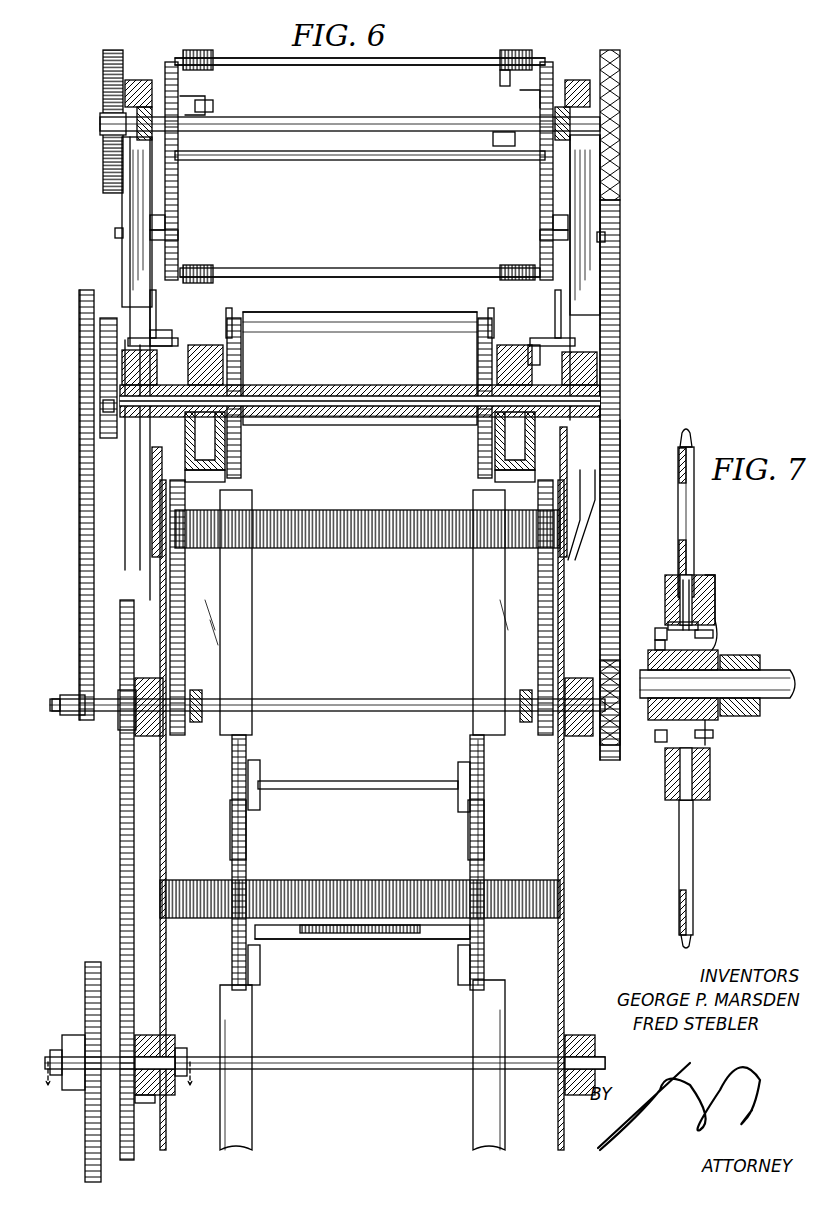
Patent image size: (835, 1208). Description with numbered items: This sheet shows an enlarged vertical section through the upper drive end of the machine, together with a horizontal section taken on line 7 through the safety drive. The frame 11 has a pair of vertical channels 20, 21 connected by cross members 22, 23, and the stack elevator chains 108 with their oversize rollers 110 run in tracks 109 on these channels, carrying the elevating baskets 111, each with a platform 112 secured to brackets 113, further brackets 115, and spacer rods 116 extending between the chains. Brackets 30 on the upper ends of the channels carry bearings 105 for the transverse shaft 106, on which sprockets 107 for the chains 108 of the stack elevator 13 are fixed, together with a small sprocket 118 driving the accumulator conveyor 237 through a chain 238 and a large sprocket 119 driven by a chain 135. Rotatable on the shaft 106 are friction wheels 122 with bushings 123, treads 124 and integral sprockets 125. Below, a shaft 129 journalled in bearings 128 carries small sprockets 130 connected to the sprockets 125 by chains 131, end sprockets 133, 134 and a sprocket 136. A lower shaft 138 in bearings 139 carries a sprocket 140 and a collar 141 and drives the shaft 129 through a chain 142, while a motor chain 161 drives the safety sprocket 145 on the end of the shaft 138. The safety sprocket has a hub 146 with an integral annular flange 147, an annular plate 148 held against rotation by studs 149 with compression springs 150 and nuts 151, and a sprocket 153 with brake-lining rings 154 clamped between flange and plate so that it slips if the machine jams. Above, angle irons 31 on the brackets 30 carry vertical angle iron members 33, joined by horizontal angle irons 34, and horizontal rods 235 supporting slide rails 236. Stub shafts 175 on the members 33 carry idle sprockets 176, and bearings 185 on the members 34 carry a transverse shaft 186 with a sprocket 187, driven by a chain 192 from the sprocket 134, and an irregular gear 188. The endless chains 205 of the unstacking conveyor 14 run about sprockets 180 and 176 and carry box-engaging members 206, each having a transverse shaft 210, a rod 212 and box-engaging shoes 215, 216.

In FIG. 6, the irregular gear 188 is at (103, 85).
In FIG. 6, the horizontal angle irons 34 is at (138, 80).
In FIG. 6, the bearings 185 is at (150, 100).
In FIG. 6, the box-engaging shoe 215 is at (211, 47).
In FIG. 6, the unstacking conveyor 14 is at (261, 54).
In FIG. 6, the transverse shaft 210 is at (322, 66).
In FIG. 6, the box-engaging members 206 is at (427, 52).
In FIG. 6, the box-engaging shoe 216 is at (518, 45).
In FIG. 6, the sprockets 180 is at (182, 95).
In FIG. 6, the transverse shaft 186 is at (392, 117).
In FIG. 6, the rod 212 is at (378, 157).
In FIG. 6, the endless chains 205 is at (178, 194).
In FIG. 6, the idle sprockets 176 is at (170, 222).
In FIG. 6, the stub shafts 175 is at (115, 233).
In FIG. 6, the vertical angle iron members 33 is at (135, 258).
In FIG. 6, the sprocket 187 is at (620, 85).
In FIG. 6, the horizontal angle irons 31 is at (150, 338).
In FIG. 6, the horizontal rods 235 is at (162, 334).
In FIG. 6, the slide rails 236 is at (232, 320).
In FIG. 6, the accumulator conveyor 237 is at (395, 306).
In FIG. 6, the transverse shaft 106 is at (366, 398).
In FIG. 6, the sprockets 107 is at (242, 360).
In FIG. 6, the bearings 105 is at (600, 396).
In FIG. 6, the bushings 123 is at (210, 418).
In FIG. 6, the friction wheels 122 is at (215, 462).
In FIG. 6, the treads 124 is at (225, 488).
In FIG. 6, the sprocket 125 is at (534, 344).
In FIG. 6, the chain 192 is at (621, 428).
In FIG. 6, the chain 238 is at (100, 350).
In FIG. 6, the small sprocket 118 is at (108, 412).
In FIG. 6, the large sprocket 119 is at (82, 455).
In FIG. 6, the chain 135 is at (82, 578).
In FIG. 6, the brackets 30 is at (150, 487).
In FIG. 6, the cross member 23 is at (358, 541).
In FIG. 6, the chains 131 is at (185, 598).
In FIG. 6, the tracks 109 is at (250, 628).
In FIG. 6, the channel 21 is at (212, 662).
In FIG. 6, the channel 20 is at (516, 647).
In FIG. 6, the shaft 129 is at (349, 699).
In FIG. 6, the sprocket 133 is at (69, 726).
In FIG. 6, the bearings 128 is at (150, 738).
In FIG. 6, the small sprockets 130 is at (198, 722).
In FIG. 6, the stack elevator 13 is at (253, 745).
In FIG. 6, the brackets 115 is at (258, 772).
In FIG. 6, the spacer rods 116 is at (352, 781).
In FIG. 6, the oversize rollers 110 is at (236, 833).
In FIG. 6, the stack elevator chains 108 is at (246, 838).
In FIG. 6, the frame 11 is at (155, 821).
In FIG. 6, the sprocket 136 is at (120, 786).
In FIG. 6, the chain 142 is at (120, 896).
In FIG. 6, the cross member 22 is at (374, 879).
In FIG. 6, the platform 112 is at (378, 940).
In FIG. 6, the brackets 113 is at (258, 962).
In FIG. 6, the elevating baskets 111 is at (333, 954).
In FIG. 6, the shaft 138 is at (358, 1057).
In FIG. 7, the shaft 138 is at (778, 674).
In FIG. 6, the bearings 139 is at (150, 1035).
In FIG. 6, the collar 141 is at (180, 1048).
In FIG. 6, the sprocket 140 is at (138, 1100).
In FIG. 7, the sprocket 140 is at (760, 708).
In FIG. 6, the safety sprocket 145 is at (79, 1108).
In FIG. 7, the safety sprocket 145 is at (726, 743).
In FIG. 6, the chain 161 is at (100, 1162).
In FIG. 6, the sprocket 134 is at (610, 748).
In FIG. 6, the section line 7- 7 is at (117, 1085).
In FIG. 7, the sprocket 153 is at (693, 445).
In FIG. 7, the annular flange 147 is at (665, 590).
In FIG. 7, the rings 154 is at (680, 586).
In FIG. 7, the annular plate 148 is at (712, 590).
In FIG. 7, the compression spring 150 is at (668, 624).
In FIG. 7, the nuts 151 is at (655, 634).
In FIG. 7, the studs 149 is at (713, 634).
In FIG. 7, the hub 146 is at (716, 656).